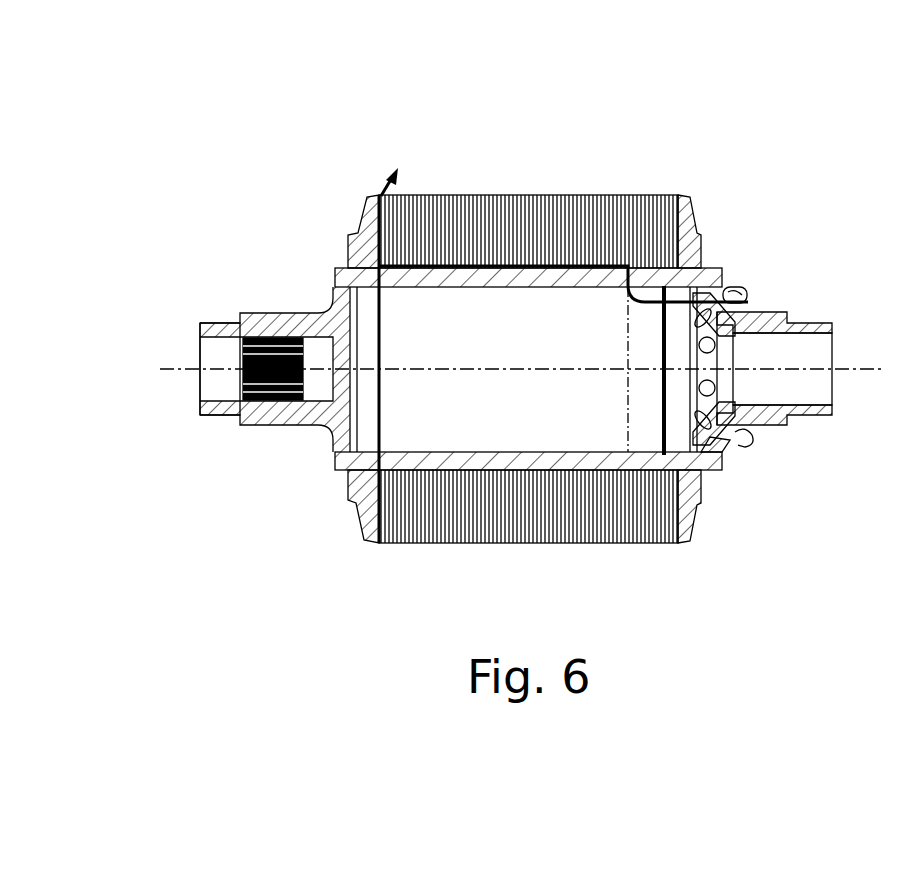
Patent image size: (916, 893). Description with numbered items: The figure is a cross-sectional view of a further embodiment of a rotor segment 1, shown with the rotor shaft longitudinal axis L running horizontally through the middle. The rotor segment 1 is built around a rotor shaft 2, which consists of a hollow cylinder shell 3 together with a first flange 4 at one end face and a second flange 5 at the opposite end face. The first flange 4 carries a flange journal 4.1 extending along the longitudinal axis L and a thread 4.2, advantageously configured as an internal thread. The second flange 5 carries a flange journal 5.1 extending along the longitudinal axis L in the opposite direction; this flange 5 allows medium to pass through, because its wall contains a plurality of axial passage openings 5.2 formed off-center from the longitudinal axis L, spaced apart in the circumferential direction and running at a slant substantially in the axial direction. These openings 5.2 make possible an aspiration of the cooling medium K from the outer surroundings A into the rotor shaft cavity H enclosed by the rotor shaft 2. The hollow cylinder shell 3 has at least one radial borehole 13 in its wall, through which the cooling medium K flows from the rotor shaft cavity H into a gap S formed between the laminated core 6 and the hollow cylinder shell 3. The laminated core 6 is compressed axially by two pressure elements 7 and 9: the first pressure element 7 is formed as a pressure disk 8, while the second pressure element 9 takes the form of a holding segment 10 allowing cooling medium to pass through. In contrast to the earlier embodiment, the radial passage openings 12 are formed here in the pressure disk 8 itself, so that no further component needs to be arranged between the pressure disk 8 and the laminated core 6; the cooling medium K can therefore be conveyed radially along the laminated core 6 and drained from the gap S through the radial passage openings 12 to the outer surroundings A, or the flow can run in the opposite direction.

The rotor segment 1 is at (632, 146).
The rotor shaft 2 is at (773, 226).
The hollow cylinder shell 3 is at (712, 462).
The first flange 4 is at (338, 282).
The flange journal 4.1 is at (205, 325).
The thread 4.2 is at (285, 418).
The second flange 5 is at (725, 285).
The flange journal 5.1 is at (832, 325).
The axial passage opening 5.2 is at (752, 440).
The laminated core 6 is at (485, 196).
The first pressure element 7 is at (700, 232).
The pressure disk 8 is at (346, 250).
The second pressure element 9 is at (345, 232).
The holding segment allowing cooling medium to pass through 10 is at (372, 196).
The radial passage opening 12 is at (360, 528).
The borehole 13 is at (640, 470).
The outer surroundings A is at (549, 111).
The rotor shaft cavity H is at (438, 407).
The gap S is at (512, 462).
The cooling medium K is at (752, 302).
The rotor shaft longitudinal axis L is at (162, 372).